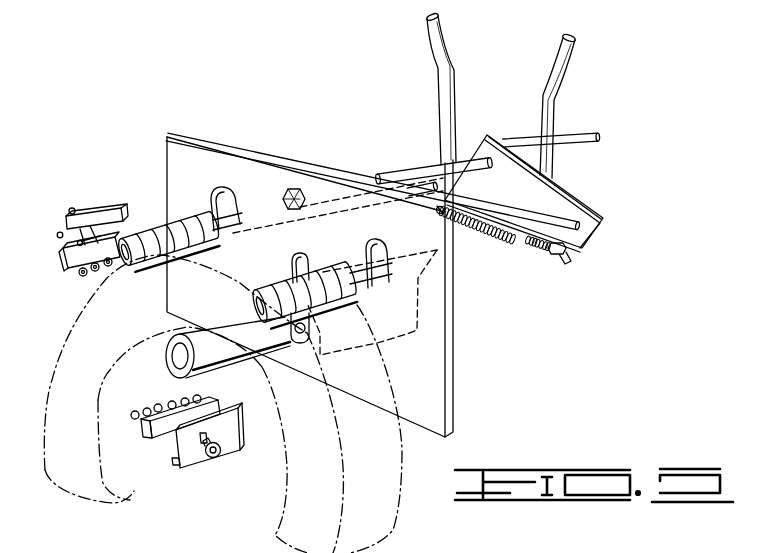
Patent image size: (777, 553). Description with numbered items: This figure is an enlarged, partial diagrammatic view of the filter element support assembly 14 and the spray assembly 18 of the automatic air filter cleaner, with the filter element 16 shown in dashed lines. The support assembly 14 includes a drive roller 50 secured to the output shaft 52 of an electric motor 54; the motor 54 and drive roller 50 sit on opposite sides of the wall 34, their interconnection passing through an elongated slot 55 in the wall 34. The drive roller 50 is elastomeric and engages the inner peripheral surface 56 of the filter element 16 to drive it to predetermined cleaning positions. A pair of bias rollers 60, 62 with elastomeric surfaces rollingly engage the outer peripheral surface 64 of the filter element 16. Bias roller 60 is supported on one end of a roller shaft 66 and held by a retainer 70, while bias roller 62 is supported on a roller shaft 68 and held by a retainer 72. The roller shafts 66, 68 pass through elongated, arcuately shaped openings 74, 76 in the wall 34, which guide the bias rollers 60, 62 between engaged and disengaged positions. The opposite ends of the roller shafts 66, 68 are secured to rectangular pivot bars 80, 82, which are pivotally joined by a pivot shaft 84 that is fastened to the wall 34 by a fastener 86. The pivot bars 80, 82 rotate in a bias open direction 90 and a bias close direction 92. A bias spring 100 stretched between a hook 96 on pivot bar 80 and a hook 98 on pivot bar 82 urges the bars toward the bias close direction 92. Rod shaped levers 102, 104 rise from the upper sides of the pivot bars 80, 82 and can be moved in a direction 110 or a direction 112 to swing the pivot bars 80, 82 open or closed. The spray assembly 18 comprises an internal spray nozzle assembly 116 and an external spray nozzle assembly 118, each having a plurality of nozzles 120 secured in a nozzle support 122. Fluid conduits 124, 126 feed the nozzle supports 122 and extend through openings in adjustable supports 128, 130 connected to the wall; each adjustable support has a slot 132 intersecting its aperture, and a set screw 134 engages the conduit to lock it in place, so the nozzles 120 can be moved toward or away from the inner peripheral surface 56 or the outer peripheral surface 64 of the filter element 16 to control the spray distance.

The filter element support assembly 14 is at (155, 282).
The filter element 16 is at (283, 497).
The spray assembly 18 is at (121, 190).
The wall 34 is at (458, 357).
The drive roller 50 is at (203, 362).
The output shaft 52 is at (311, 328).
The electric motor 54 is at (450, 287).
The elongated slot 55 is at (297, 258).
The inner peripheral surface 56 is at (127, 507).
The bias roller 60 is at (173, 228).
The bias roller 62 is at (279, 285).
The outer peripheral surface 64 is at (388, 518).
The roller shaft 66 is at (229, 226).
The roller shaft 68 is at (374, 294).
The retainer 70 is at (128, 258).
The retainer 72 is at (250, 307).
The arcuately shaped opening 74 is at (223, 198).
The arcuately shaped opening 76 is at (380, 238).
The pivot bar 80 is at (462, 150).
The pivot bar 82 is at (553, 186).
The pivot shaft 84 is at (367, 181).
The fastener 86 is at (293, 188).
The bias open direction 90 is at (420, 148).
The bias close direction 92 is at (407, 158).
The hook 96 is at (437, 213).
The hook 98 is at (562, 265).
The bias spring 100 is at (500, 224).
The rod shaped lever 102 is at (440, 19).
The rod shaped lever 104 is at (577, 41).
The direction 110 is at (470, 40).
The direction 112 is at (404, 32).
The internal spray nozzle assembly 116 is at (120, 443).
The external spray nozzle assembly 118 is at (50, 284).
The nozzles 120 is at (80, 278).
The nozzle support 122 is at (113, 234).
The fluid conduit 124 is at (70, 212).
The fluid conduit 126 is at (236, 429).
The adjustable support 128 is at (97, 212).
The adjustable support 130 is at (241, 418).
The slot 132 is at (80, 243).
The set screw 134 is at (60, 240).